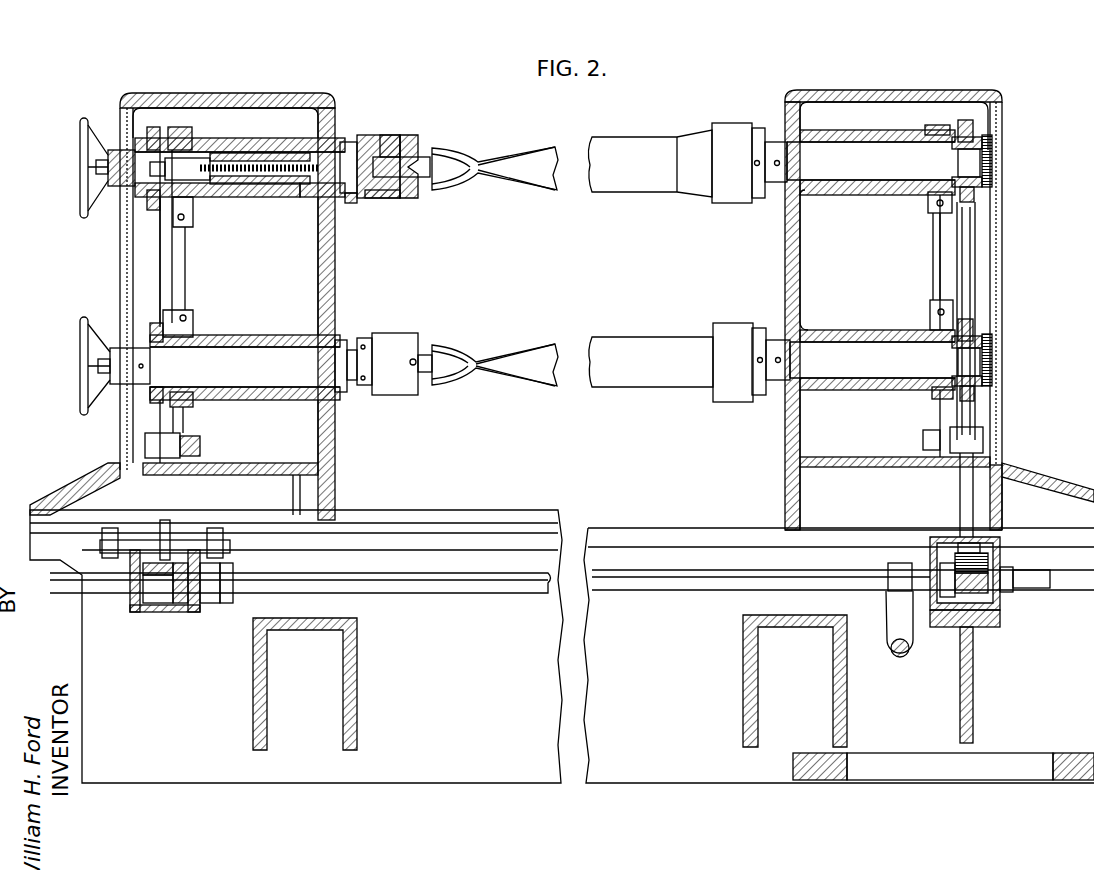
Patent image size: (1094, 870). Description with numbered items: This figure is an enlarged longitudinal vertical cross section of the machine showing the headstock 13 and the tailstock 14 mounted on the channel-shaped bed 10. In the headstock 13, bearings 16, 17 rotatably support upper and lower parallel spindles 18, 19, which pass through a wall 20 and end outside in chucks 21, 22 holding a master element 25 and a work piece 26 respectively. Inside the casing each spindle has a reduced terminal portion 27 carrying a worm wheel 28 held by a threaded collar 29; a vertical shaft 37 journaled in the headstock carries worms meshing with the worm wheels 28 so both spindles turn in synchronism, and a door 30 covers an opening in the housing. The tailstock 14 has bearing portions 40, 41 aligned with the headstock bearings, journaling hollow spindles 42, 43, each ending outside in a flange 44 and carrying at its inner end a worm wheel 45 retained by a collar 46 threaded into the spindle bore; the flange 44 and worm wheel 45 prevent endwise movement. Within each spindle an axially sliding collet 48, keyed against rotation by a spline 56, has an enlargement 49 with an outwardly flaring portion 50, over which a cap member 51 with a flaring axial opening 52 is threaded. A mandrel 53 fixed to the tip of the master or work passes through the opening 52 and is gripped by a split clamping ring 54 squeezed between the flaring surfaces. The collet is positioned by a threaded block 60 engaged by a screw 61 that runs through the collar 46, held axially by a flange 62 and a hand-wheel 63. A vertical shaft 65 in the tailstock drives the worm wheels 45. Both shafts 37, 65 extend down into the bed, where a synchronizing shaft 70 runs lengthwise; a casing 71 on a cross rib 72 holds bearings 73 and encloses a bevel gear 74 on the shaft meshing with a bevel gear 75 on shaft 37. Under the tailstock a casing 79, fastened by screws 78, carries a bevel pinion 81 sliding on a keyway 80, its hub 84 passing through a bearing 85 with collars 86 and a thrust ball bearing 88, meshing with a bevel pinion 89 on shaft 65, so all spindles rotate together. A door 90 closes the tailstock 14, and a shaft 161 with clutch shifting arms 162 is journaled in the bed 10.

The bed 10 is at (560, 515).
The headstock 13 is at (893, 90).
The tailstock 14 is at (213, 93).
The bearing 16 is at (893, 192).
The bearing 17 is at (893, 340).
The upper spindle 18 is at (830, 165).
The lower spindle 19 is at (830, 360).
The wall 20 is at (785, 232).
The chuck 21 is at (733, 130).
The chuck 22 is at (735, 330).
The master element 25 is at (632, 145).
The work piece 26 is at (655, 345).
The reduced terminal portion 27 is at (967, 163).
The worm wheel 28 is at (975, 127).
The collar 29 is at (968, 194).
The door 30 is at (1002, 260).
The vertical shaft 37 is at (968, 228).
The bearing portion 40 is at (245, 197).
The bearing portion 41 is at (243, 335).
The spindle 42 is at (262, 145).
The spindle 43 is at (283, 360).
The flange 44 is at (345, 142).
The worm wheel 45 is at (172, 128).
The collar 46 is at (150, 125).
The collet 48 is at (350, 200).
The enlargement 49 is at (372, 138).
The outwardly flaring portion 50 is at (380, 198).
The cap member 51 is at (405, 198).
The axial opening 52 is at (420, 180).
The mandrel 53 is at (440, 150).
The split clamping ring 54 is at (410, 138).
The spline 56 is at (312, 197).
The internally threaded block 60 is at (205, 195).
The screw 61 is at (218, 165).
The flange 62 is at (212, 155).
The hand-wheel 63 is at (80, 168).
The vertical shaft 65 is at (155, 268).
The synchronizing shaft 70 is at (445, 590).
The casing 71 is at (1005, 600).
The cross rib 72 is at (973, 672).
The bearings 73 is at (1000, 560).
The bevel gear 74 is at (955, 600).
The bevel gear 75 is at (943, 565).
The screws 78 is at (220, 545).
The casing 79 is at (135, 580).
The keyway 80 is at (393, 590).
The bevel pinion 81 is at (195, 550).
The hub 84 is at (210, 605).
The bearing 85 is at (185, 605).
The collars 86 is at (225, 605).
The thrust ball bearing 88 is at (160, 600).
The bevel pinion 89 is at (155, 590).
The door 90 is at (127, 240).
The shaft 161 is at (903, 660).
The clutch shifting arms 162 is at (890, 615).